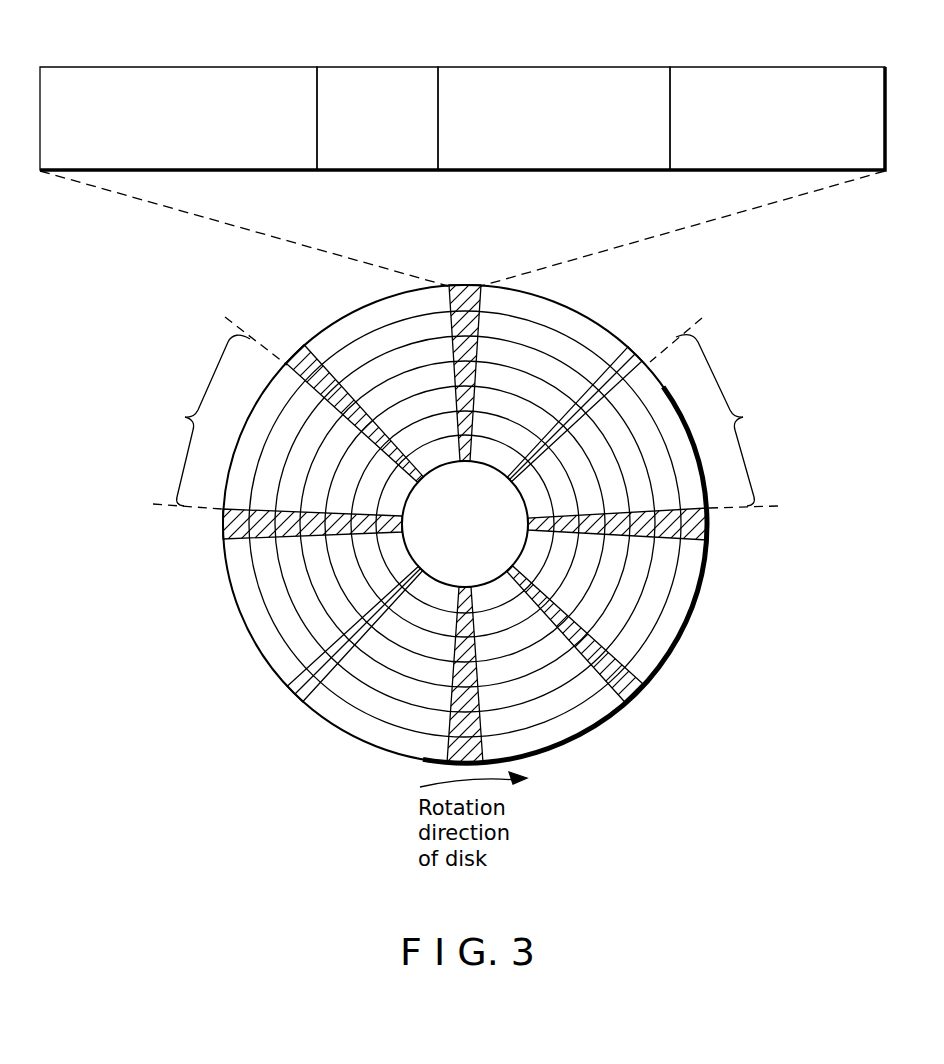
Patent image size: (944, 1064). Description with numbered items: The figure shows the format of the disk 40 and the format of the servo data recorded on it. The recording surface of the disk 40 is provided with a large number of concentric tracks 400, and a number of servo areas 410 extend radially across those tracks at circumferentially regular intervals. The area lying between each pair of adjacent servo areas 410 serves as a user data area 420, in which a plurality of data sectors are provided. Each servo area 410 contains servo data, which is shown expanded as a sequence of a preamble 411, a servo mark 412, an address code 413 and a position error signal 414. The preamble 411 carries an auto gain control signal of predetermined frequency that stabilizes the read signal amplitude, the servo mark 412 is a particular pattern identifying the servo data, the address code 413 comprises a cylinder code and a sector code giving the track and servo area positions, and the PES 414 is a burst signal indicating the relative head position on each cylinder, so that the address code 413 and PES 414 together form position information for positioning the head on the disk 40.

The disk 40 is at (313, 718).
The concentric tracks 400 is at (637, 640).
The servo area 410 is at (463, 285).
The preamble 411 is at (182, 67).
The servo mark 412 is at (379, 67).
The address code 413 is at (557, 67).
The position error signal (PES) 414 is at (787, 67).
The user data area 420 is at (464, 413).